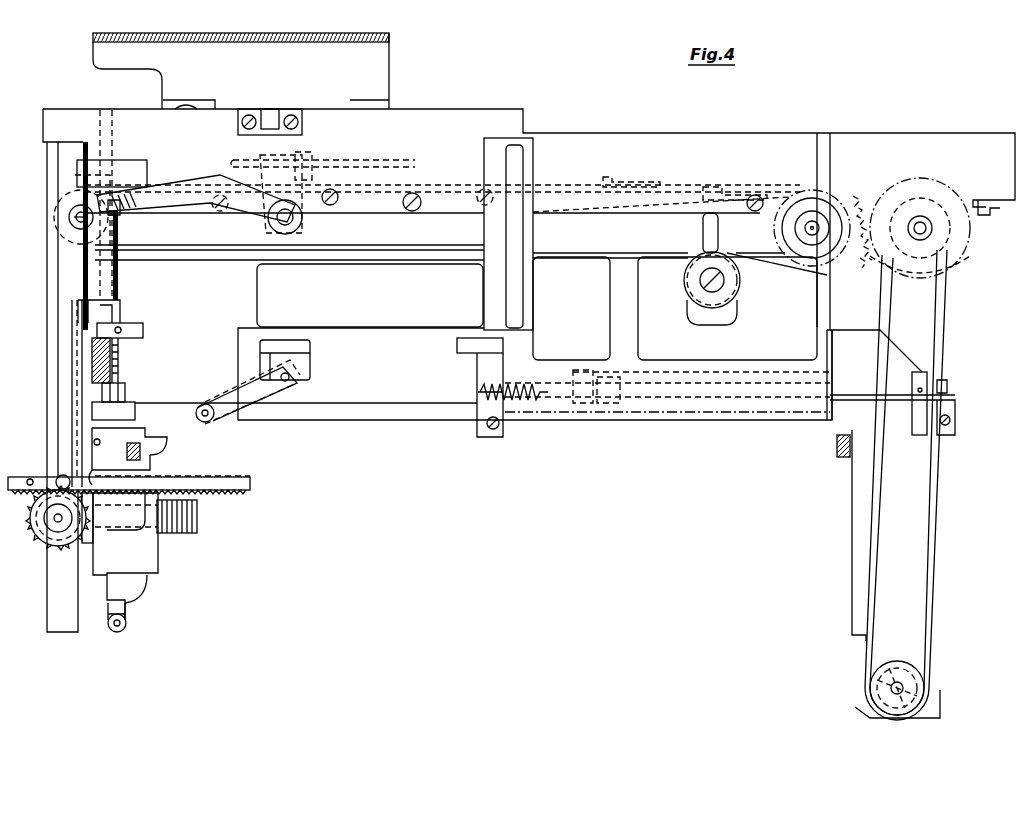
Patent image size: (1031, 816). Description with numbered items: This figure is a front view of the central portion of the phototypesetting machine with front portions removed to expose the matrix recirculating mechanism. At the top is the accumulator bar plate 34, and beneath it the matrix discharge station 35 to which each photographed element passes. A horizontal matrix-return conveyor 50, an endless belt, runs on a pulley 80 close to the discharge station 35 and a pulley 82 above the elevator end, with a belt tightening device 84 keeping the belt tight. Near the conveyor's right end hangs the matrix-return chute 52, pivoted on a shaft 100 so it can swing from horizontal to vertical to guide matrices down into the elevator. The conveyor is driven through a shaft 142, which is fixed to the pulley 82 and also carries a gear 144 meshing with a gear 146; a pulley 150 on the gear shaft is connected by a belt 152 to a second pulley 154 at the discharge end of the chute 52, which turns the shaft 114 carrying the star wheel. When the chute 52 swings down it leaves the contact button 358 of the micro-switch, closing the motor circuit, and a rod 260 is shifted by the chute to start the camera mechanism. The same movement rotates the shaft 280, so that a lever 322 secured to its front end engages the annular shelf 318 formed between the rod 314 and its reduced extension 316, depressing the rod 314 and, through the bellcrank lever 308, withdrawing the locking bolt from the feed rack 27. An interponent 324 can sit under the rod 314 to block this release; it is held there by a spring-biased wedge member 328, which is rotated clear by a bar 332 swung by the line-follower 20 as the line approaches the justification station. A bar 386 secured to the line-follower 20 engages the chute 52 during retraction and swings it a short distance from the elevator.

The line-follower 20 is at (135, 552).
The feed rack 27 is at (230, 478).
The accumulator bar plate 34 is at (386, 52).
The matrix discharge station 35 is at (40, 171).
The matrix-return conveyor 50 is at (565, 183).
The matrix-return chute 52 is at (851, 492).
The pulley 80 is at (66, 226).
The pulley 82 is at (800, 190).
The belt tightening device 84 is at (699, 278).
The shaft 100 is at (920, 220).
The shaft 114 is at (903, 690).
The shaft 142 is at (805, 228).
The gear 144 is at (855, 200).
The gear 146 is at (864, 262).
The pulley 150 is at (940, 258).
The belt 152 is at (940, 340).
The second pulley 154 is at (885, 662).
The rod 260 is at (343, 160).
The shaft 280 is at (298, 225).
The bellcrank lever 308 is at (64, 414).
The rod 314 is at (120, 272).
The extension 316 is at (100, 118).
The annular shelf 318 is at (120, 228).
The lever 322 is at (160, 180).
The interponent 324 is at (143, 331).
The wedge member 328 is at (128, 400).
The bar 332 is at (178, 408).
The contact button 358 is at (1002, 224).
The bar 386 is at (142, 452).